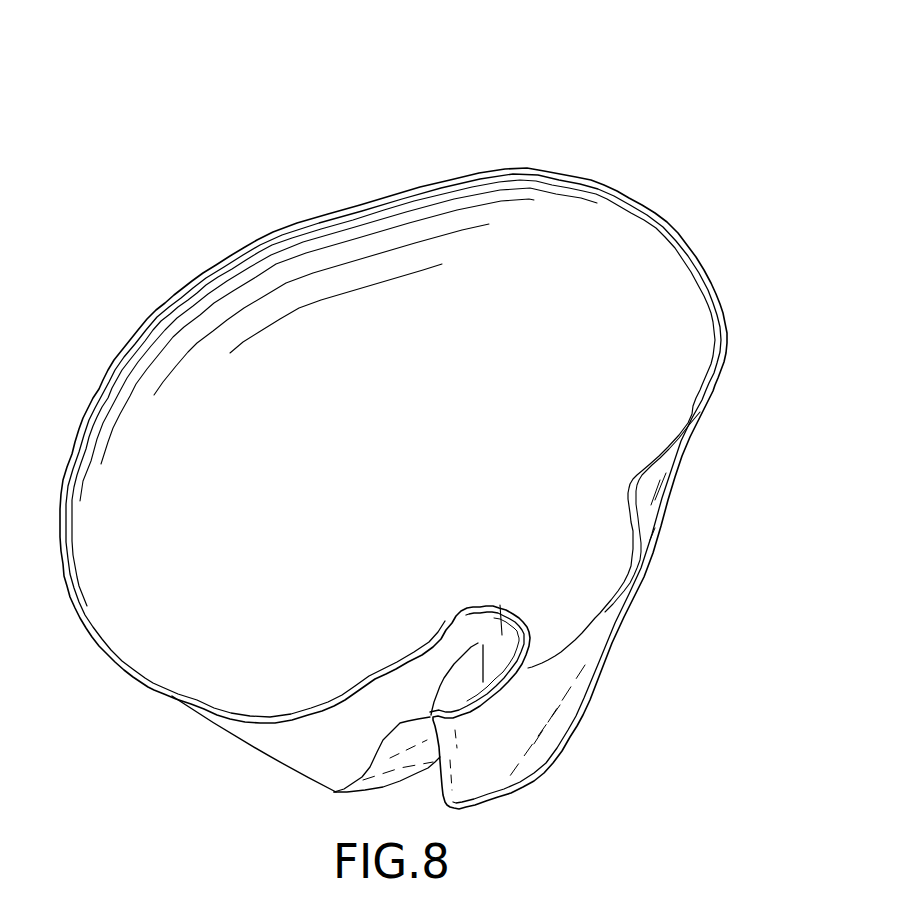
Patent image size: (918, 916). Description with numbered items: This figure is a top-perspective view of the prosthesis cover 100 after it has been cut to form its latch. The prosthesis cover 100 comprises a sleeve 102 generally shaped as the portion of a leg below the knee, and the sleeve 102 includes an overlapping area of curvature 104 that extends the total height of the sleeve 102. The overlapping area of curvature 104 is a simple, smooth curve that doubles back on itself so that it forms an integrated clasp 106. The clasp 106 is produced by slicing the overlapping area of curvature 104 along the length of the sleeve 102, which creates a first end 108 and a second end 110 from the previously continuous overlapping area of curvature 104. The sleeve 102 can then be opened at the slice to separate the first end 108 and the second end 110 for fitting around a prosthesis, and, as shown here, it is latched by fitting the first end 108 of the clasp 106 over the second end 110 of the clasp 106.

The prosthesis cover 100 is at (397, 430).
The sleeve 102 is at (667, 223).
The overlapping area of curvature 104 is at (614, 710).
The clasp 106 is at (466, 605).
The first end 108 is at (500, 605).
The second end 110 is at (334, 792).